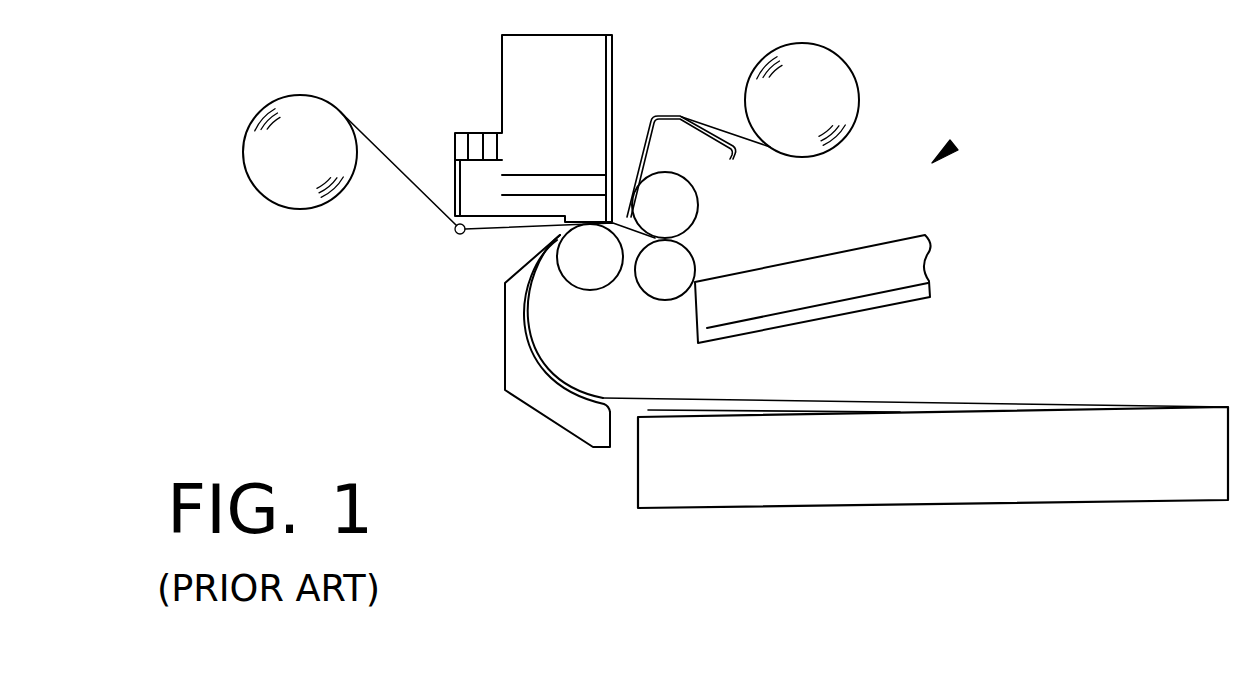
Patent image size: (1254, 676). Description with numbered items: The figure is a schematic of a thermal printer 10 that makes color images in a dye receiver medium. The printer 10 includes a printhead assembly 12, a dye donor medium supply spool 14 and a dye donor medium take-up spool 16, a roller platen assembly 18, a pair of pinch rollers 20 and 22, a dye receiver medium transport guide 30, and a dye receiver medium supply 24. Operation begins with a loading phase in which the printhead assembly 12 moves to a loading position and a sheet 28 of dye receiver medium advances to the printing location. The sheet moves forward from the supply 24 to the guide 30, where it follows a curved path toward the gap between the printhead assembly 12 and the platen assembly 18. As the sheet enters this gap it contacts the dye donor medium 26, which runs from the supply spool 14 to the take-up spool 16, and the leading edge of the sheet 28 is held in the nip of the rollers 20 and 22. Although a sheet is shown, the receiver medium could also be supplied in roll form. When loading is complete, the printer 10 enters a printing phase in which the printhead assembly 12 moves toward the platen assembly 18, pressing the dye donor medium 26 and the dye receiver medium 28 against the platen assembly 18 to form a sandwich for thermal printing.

The thermal printer 10 is at (955, 146).
The printhead assembly 12 is at (527, 208).
The dye donor medium supply spool 14 is at (295, 203).
The dye donor medium take-up spool 16 is at (850, 100).
The roller platen assembly 18 is at (600, 286).
The pinch roller 20 is at (667, 292).
The pinch roller 22 is at (688, 207).
The dye receiver medium supply 24 is at (638, 483).
The dye donor medium 26 is at (437, 212).
The sheet of dye receiver medium 28 is at (650, 413).
The dye receiver medium transport guide 30 is at (505, 357).